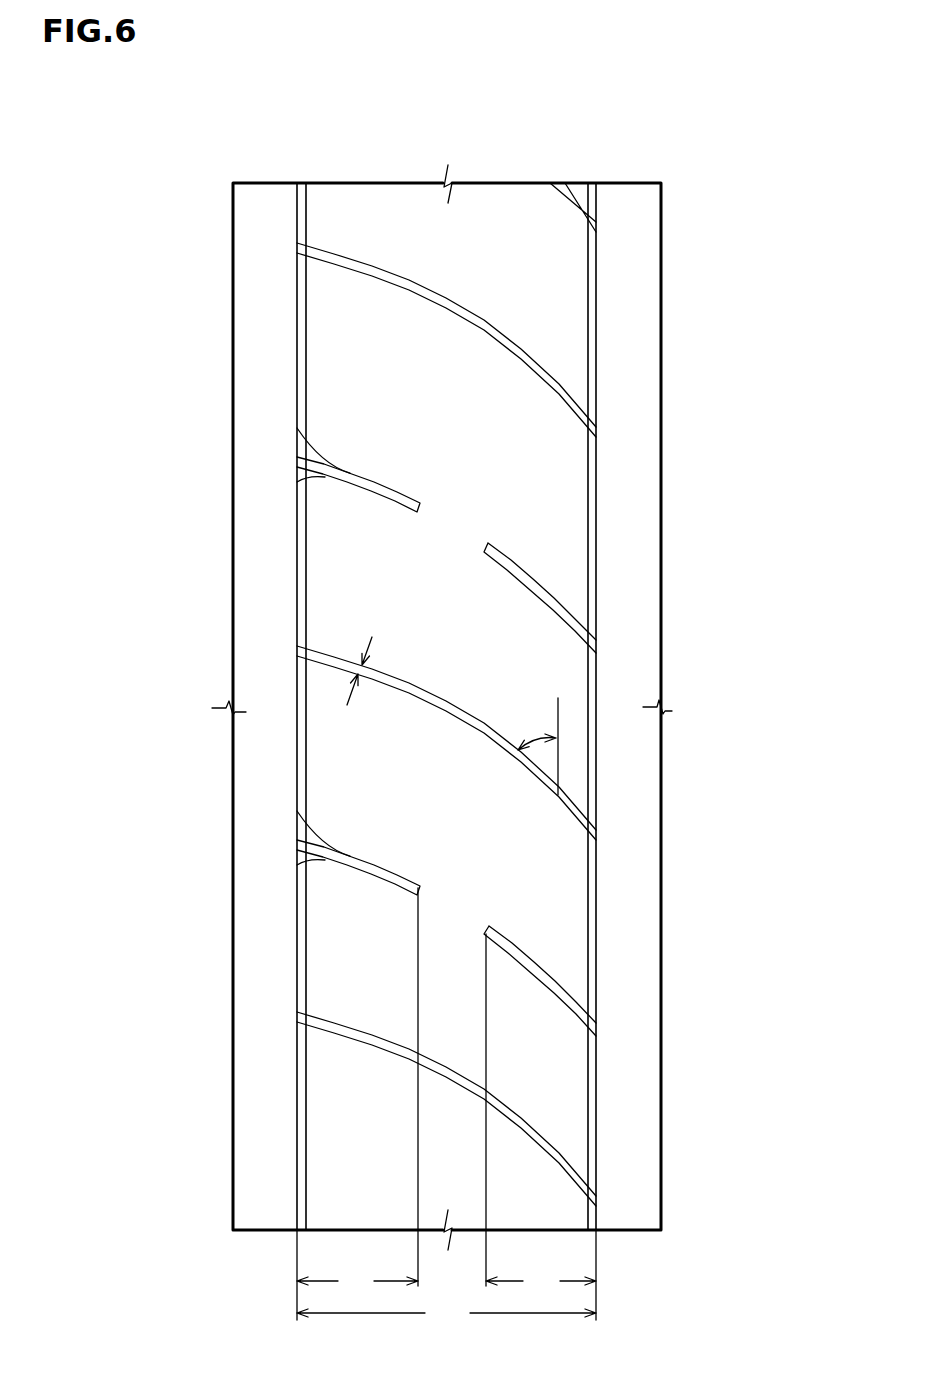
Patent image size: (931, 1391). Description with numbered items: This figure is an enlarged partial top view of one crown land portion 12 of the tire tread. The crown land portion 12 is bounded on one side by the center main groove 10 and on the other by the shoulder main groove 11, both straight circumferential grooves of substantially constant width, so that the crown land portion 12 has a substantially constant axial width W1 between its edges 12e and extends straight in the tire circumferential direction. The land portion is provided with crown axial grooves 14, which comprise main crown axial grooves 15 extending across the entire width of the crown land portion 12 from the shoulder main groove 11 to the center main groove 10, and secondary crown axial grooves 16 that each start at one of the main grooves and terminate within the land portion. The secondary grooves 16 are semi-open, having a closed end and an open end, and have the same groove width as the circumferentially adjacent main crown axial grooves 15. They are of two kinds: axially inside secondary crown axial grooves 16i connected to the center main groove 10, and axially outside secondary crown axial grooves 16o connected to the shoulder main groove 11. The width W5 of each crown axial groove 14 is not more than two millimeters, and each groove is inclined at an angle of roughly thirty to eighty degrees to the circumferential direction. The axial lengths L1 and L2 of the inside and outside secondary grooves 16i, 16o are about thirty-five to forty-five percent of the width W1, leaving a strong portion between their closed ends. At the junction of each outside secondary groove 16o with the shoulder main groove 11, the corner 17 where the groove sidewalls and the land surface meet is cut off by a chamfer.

The center main groove 10 is at (626, 201).
The shoulder main groove 11 is at (267, 207).
The crown land portion 12 is at (491, 214).
The edge of crown land portion 12e is at (297, 572).
The crown axial grooves 14 is at (780, 950).
The main crown axial groove 15 is at (505, 337).
The secondary crown axial groove 16 is at (722, 913).
The axially inside secondary crown axial groove 16i is at (537, 581).
The axially outside secondary crown axial groove 16o is at (370, 478).
The corner 17 is at (285, 849).
The width of crown axial groove W5 is at (356, 652).
The axial length of axially inside secondary crown axial groove L1 is at (541, 1114).
The axial length of axially outside secondary crown axial groove L2 is at (357, 1091).
The axial width of crown land portion W1 is at (446, 1278).